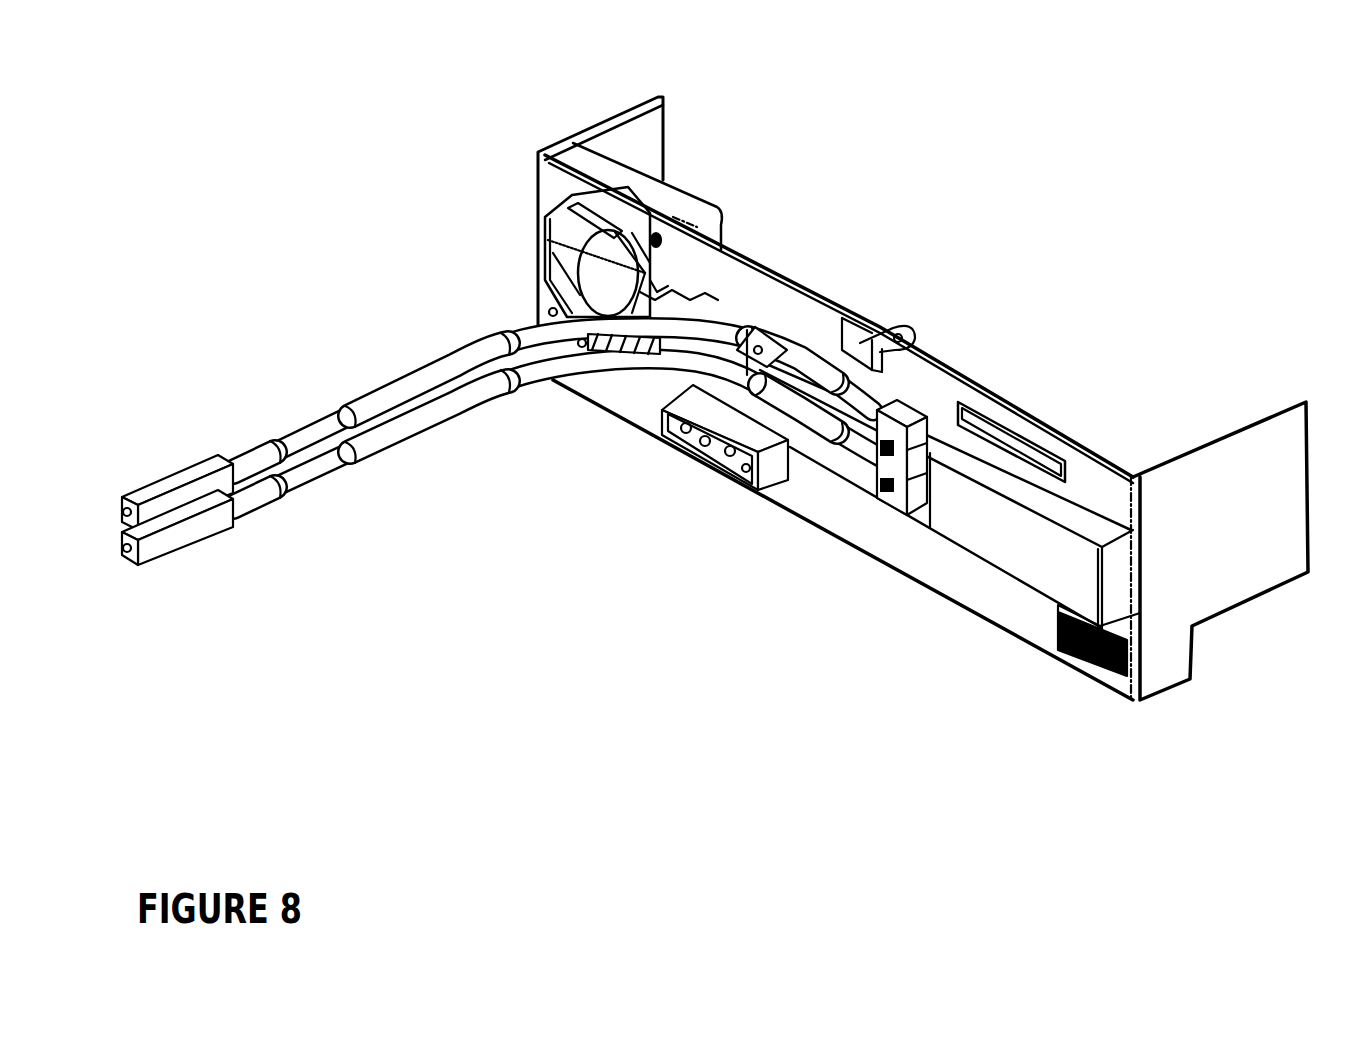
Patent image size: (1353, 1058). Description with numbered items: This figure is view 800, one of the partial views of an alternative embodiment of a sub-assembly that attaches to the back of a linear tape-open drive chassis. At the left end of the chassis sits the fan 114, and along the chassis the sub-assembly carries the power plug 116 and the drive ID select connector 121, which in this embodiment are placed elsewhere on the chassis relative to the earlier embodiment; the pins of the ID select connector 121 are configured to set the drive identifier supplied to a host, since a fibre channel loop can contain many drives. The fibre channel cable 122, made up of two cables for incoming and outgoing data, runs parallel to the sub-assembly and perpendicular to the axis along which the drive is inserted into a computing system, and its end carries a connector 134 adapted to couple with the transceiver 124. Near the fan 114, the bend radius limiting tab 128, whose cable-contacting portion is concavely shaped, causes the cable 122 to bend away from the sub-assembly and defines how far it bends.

The view 800 is at (190, 165).
The fan 114 is at (648, 405).
The power plug 116 is at (702, 476).
The ID select connector 121 is at (1077, 660).
The fibre channel cable 122 is at (317, 487).
The transceiver 124 is at (1032, 551).
The bend radius limiting tab 128 is at (704, 298).
The connector 134 is at (903, 410).